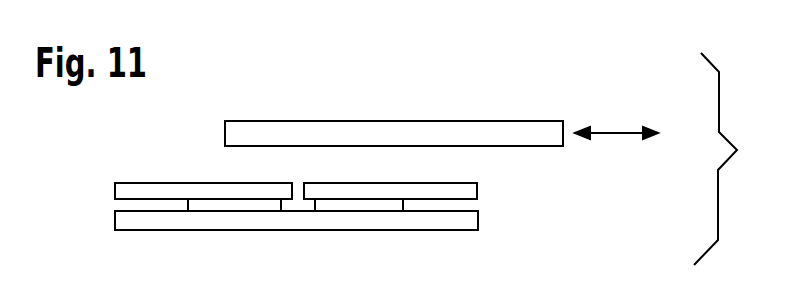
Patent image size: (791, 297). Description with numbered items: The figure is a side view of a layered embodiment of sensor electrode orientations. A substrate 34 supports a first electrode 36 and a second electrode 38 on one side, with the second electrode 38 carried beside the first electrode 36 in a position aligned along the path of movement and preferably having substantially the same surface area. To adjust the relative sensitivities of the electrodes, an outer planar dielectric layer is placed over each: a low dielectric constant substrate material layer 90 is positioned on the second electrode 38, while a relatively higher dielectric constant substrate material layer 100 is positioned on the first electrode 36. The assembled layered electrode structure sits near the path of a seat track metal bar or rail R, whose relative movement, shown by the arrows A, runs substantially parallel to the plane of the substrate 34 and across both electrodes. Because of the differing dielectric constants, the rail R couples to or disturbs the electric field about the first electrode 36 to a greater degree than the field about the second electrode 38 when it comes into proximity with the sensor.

The low dielectric constant substrate material layer 90 is at (117, 190).
The higher dielectric constant substrate material layer 100 is at (472, 185).
The second electrode 38 is at (250, 205).
The first electrode 36 is at (350, 205).
The substrate 34 is at (438, 228).
The seat track metal bar or rail R is at (502, 128).
The arrows A is at (607, 133).